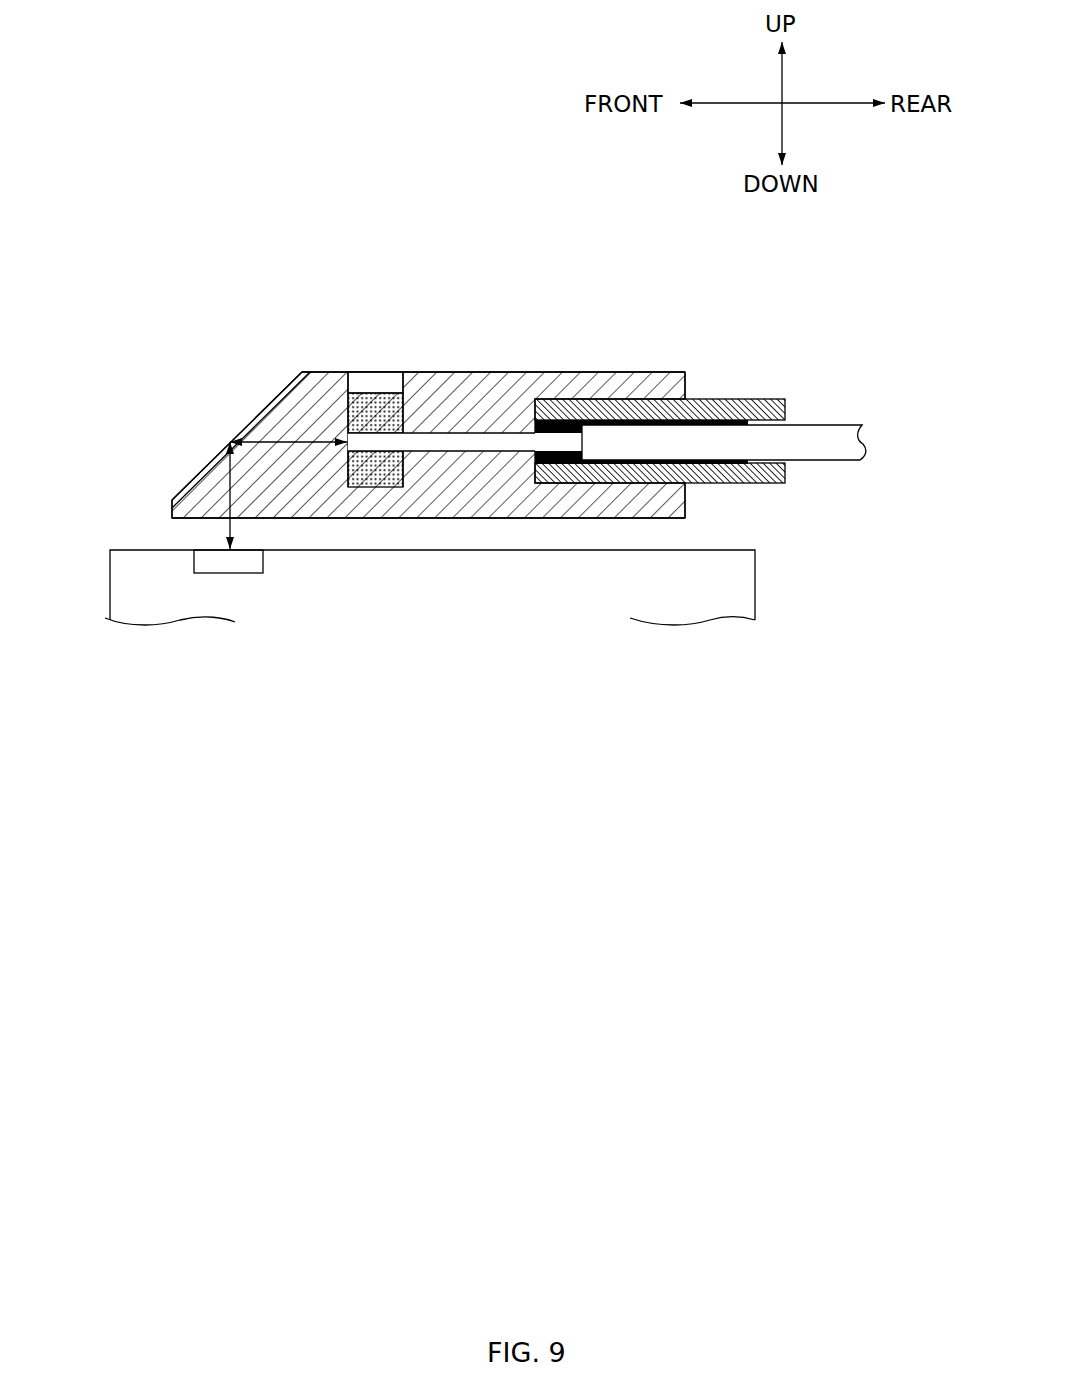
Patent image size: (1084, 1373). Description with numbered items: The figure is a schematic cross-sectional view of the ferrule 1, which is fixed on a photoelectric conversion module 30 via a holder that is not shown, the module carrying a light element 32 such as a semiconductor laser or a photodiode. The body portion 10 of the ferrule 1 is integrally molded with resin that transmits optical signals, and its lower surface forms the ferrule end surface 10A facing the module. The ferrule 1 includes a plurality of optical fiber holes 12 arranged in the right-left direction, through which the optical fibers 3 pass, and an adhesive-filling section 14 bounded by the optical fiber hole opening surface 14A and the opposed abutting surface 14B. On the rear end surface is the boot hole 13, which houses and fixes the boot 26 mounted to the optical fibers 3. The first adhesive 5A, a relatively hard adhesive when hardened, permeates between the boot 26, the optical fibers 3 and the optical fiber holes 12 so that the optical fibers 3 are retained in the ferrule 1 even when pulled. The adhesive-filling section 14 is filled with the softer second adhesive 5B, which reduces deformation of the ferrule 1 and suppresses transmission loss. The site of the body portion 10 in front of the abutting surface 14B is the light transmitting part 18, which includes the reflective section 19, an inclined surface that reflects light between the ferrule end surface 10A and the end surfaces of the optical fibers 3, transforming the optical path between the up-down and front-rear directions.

The ferrule 1 is at (618, 297).
The optical fibers 3 is at (450, 445).
The first adhesive 5A is at (558, 468).
The second adhesive 5B is at (362, 477).
The body portion 10 is at (513, 380).
The ferrule end surface 10A is at (187, 520).
The optical fiber holes 12 is at (488, 448).
The boot hole 13 is at (613, 488).
The adhesive-filling section 14 is at (367, 380).
The optical fiber hole opening surface 14A is at (403, 373).
The abutting surface 14B is at (355, 373).
The light transmitting part 18 is at (282, 478).
The reflective section 19 is at (247, 427).
The boot 26 is at (735, 397).
The photoelectric conversion module 30 is at (743, 583).
The light element 32 is at (197, 563).